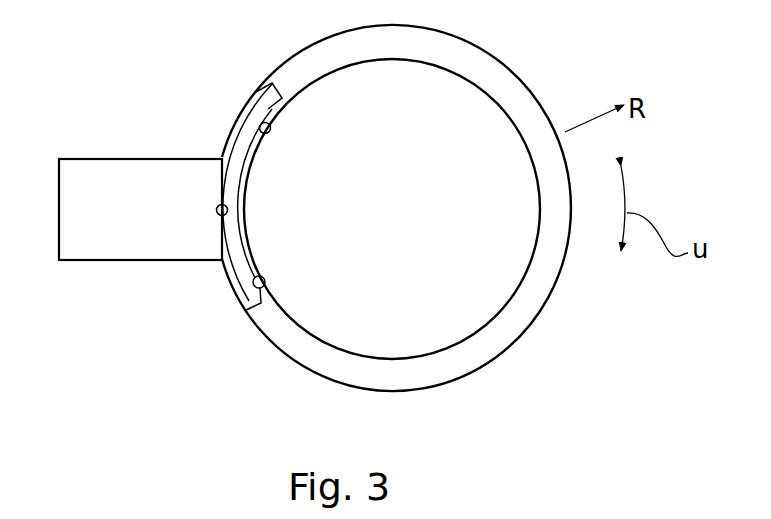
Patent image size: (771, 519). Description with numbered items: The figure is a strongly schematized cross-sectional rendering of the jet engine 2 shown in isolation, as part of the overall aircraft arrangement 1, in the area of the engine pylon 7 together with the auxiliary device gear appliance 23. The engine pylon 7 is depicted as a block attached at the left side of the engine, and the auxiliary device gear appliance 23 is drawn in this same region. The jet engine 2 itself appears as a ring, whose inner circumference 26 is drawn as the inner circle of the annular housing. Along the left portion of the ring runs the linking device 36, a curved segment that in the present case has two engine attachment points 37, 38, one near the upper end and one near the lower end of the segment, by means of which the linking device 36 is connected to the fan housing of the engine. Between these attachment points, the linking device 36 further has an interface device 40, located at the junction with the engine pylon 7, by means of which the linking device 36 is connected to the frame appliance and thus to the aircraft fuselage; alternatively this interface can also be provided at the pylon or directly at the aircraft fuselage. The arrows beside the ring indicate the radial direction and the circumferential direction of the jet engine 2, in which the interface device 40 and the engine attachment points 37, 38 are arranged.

The optical device 1 is at (124, 247).
The jet engine 2 is at (549, 66).
The engine pylon 7 is at (125, 247).
The auxiliary device gear appliance 23 is at (132, 242).
The inner circumference of ring 26 is at (521, 321).
The linking device 36 is at (237, 151).
The engine attachment point 37 is at (260, 128).
The engine attachment point 38 is at (262, 288).
The interface device 40 is at (220, 215).